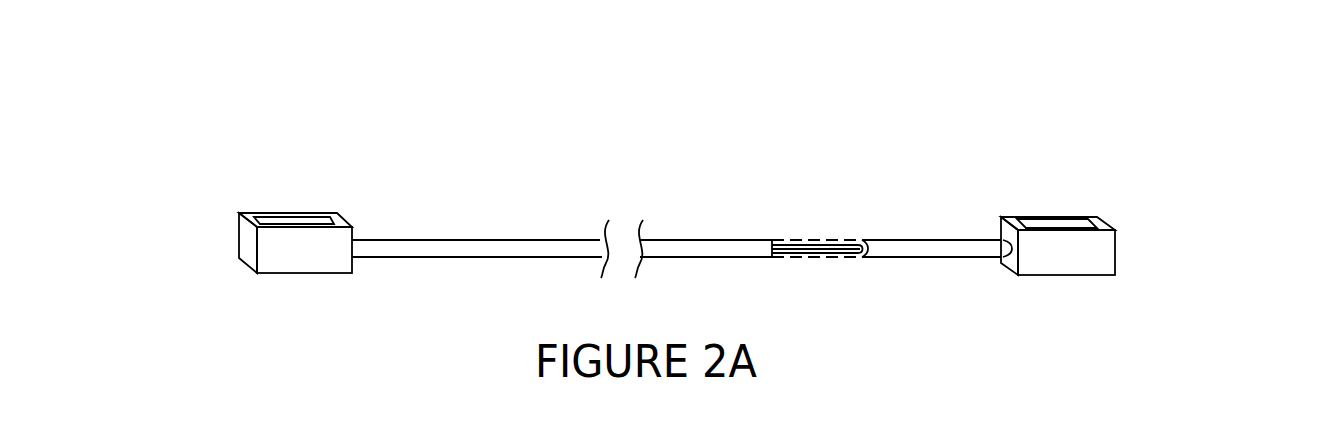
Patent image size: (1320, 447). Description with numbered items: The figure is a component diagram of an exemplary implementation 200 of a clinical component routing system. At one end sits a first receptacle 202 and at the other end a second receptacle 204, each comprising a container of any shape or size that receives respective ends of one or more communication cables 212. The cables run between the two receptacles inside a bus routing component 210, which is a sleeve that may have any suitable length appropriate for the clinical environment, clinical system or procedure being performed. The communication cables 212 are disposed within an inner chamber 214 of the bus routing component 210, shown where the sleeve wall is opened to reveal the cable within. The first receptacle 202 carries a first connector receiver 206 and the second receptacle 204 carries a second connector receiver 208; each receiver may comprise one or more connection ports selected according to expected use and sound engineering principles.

The implementation 200 is at (392, 81).
The first receptacle 202 is at (240, 237).
The second receptacle 204 is at (1115, 250).
The first connector receiver 206 is at (304, 219).
The second connector receiver 208 is at (1066, 220).
The bus routing component 210 is at (506, 240).
The communication cable 212 is at (834, 243).
The inner chamber 214 is at (784, 240).